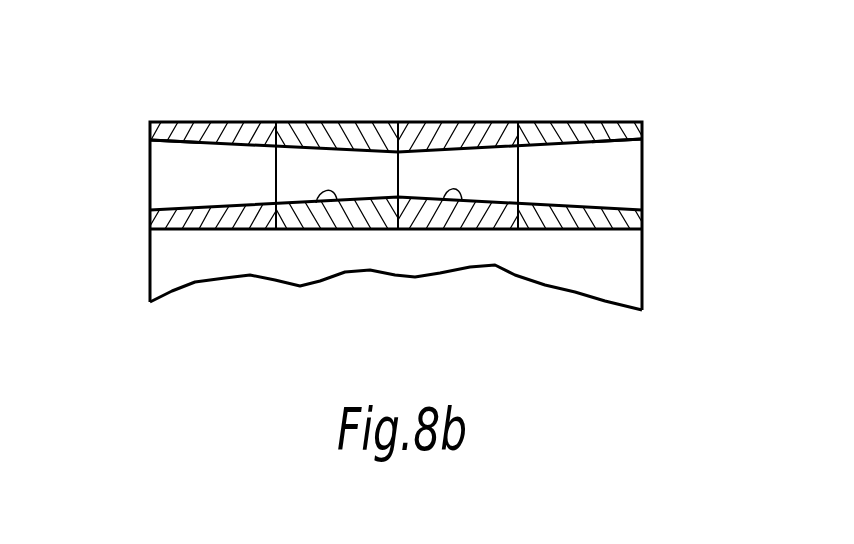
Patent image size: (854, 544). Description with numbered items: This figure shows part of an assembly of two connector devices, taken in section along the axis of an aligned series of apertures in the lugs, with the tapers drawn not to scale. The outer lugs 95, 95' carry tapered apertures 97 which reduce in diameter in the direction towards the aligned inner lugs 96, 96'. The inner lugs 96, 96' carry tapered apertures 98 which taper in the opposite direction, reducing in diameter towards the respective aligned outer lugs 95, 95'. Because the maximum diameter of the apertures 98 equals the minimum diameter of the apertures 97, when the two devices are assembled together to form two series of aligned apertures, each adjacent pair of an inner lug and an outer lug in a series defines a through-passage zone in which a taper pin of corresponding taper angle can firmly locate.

The outer lug 95 is at (580, 136).
The outer lug 95' is at (213, 133).
The inner lug 96 is at (337, 136).
The inner lug 96' is at (458, 133).
The tapered aperture 97 is at (171, 141).
The tapered aperture 98 is at (337, 200).